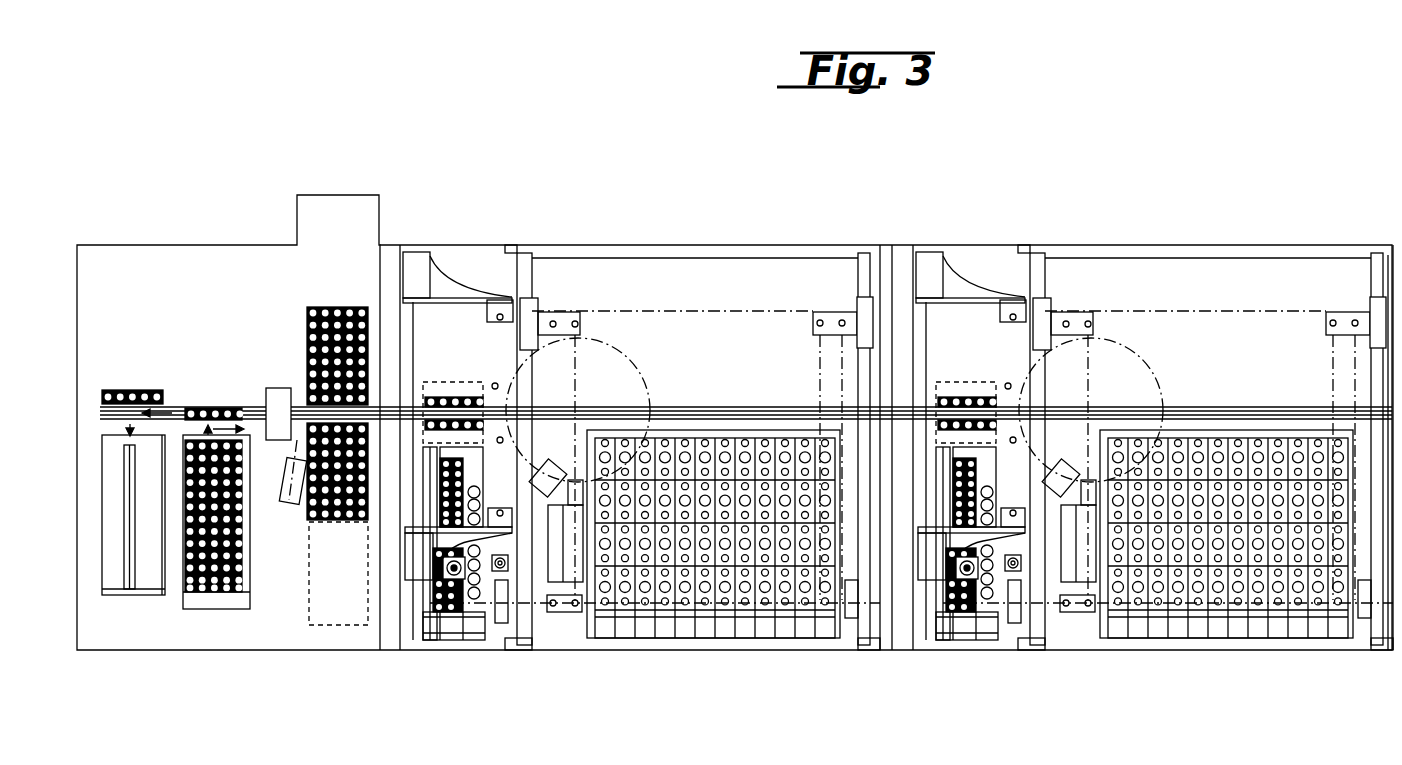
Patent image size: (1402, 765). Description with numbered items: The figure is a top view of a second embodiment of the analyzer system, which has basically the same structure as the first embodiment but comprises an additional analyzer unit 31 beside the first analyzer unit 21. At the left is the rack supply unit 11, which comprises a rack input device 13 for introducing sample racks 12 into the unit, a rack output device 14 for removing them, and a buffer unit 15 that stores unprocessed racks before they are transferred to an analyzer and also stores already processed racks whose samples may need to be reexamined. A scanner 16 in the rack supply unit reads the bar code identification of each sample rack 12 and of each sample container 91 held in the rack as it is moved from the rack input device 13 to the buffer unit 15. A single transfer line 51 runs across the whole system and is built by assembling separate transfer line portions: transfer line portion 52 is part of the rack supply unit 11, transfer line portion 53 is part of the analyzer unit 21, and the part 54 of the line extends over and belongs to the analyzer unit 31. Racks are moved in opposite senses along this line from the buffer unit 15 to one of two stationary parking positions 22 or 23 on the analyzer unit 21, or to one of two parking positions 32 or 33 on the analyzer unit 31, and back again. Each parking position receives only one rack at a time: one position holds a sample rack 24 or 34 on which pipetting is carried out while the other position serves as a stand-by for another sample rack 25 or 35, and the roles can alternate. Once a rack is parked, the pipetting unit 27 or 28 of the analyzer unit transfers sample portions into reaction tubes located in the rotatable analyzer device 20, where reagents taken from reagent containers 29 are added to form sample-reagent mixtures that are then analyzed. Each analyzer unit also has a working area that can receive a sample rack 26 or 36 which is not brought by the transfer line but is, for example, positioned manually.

The rack supply unit 11 is at (221, 245).
The sample rack 12 is at (231, 405).
The rack input device 13 is at (232, 608).
The rack output device 14 is at (145, 596).
The buffer unit 15 is at (344, 626).
The scanner 16 is at (283, 510).
The rotatable analyzer device 20 is at (639, 370).
The analyzer unit 21 is at (626, 245).
The parking position 22 is at (478, 444).
The parking position 23 is at (465, 383).
The sample rack 24 is at (483, 424).
The sample rack 25 is at (483, 400).
The sample rack 26 is at (455, 632).
The pipetting unit 27 is at (462, 292).
The pipetting unit 28 is at (423, 565).
The reagent containers 29 is at (683, 628).
The analyzer unit 31 is at (1143, 652).
The parking position 32 is at (991, 444).
The parking position 33 is at (978, 383).
The sample rack 34 is at (996, 424).
The sample rack 35 is at (996, 400).
The sample rack 36 is at (967, 632).
The single transfer line 51 is at (690, 405).
The transfer line portion 52 is at (178, 405).
The transfer line portion 53 is at (712, 405).
The transfer line portion 54 is at (902, 405).
The sample container 91 is at (315, 307).